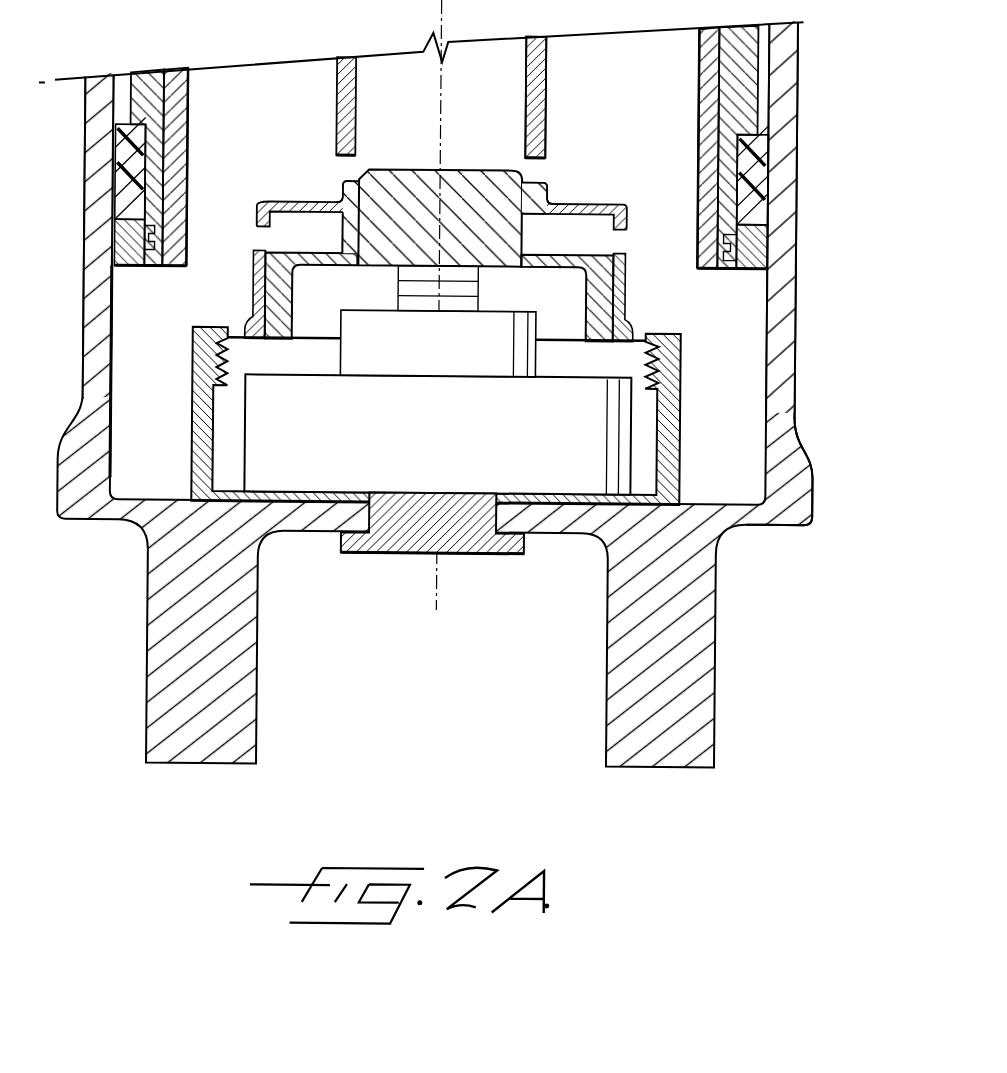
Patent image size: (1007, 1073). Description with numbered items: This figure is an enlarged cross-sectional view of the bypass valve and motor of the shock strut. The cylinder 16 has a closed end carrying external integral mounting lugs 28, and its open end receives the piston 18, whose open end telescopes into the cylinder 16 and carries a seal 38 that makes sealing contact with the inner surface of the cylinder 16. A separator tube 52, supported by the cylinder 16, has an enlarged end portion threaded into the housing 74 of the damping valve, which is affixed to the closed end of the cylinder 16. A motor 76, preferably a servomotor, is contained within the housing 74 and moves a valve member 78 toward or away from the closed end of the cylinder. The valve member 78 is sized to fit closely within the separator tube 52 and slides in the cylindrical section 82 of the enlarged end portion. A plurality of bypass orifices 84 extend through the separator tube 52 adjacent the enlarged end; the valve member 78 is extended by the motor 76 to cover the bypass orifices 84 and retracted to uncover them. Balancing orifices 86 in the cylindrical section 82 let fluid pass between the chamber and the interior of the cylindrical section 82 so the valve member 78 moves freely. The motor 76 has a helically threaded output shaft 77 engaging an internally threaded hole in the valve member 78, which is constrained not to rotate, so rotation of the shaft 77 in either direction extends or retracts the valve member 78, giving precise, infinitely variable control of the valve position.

The cylinder 16 is at (788, 245).
The piston 18 is at (739, 77).
The mounting lugs 28 is at (788, 526).
The seal 38 is at (755, 170).
The separator tube 52 is at (543, 76).
The housing 74 is at (680, 449).
The motor 76 is at (245, 444).
The output shaft 77 is at (447, 291).
The valve member 78 is at (476, 170).
The cylindrical section 82 is at (626, 300).
The bypass orifices 84 is at (340, 158).
The balancing orifices 86 is at (257, 229).